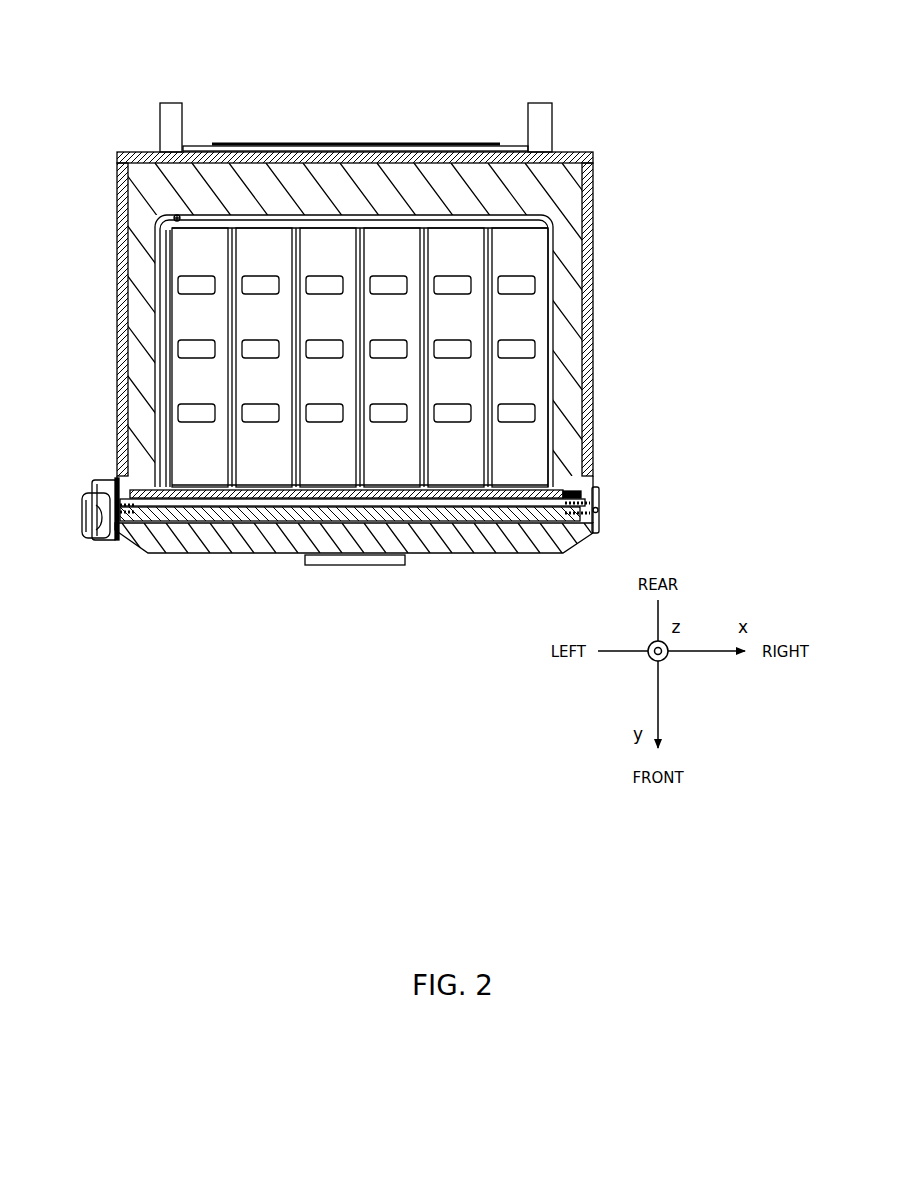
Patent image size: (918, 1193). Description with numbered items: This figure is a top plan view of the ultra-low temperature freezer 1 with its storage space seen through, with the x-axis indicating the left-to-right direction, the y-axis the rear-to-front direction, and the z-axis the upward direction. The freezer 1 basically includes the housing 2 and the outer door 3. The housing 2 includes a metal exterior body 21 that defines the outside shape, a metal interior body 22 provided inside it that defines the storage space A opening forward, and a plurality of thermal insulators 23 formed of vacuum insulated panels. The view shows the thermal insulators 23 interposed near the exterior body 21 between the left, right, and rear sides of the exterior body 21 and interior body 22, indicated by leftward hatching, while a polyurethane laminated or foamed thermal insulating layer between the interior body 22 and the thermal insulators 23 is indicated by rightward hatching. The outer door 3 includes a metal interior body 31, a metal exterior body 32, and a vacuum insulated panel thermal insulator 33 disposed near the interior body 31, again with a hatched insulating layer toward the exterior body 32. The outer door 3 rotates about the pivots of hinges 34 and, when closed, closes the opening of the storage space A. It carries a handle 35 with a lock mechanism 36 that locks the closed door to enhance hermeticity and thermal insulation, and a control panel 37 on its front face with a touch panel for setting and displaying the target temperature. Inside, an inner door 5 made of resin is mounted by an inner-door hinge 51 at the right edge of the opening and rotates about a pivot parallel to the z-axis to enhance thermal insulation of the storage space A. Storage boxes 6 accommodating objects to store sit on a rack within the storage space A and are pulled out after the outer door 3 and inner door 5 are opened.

The ultra-low temperature freezer 1 is at (92, 27).
The housing 2 is at (609, 185).
The exterior body 21 is at (590, 255).
The interior body 22 is at (538, 320).
The thermal insulator 23 is at (350, 157).
The storage box 6 is at (325, 240).
The storage space A is at (391, 240).
The outer door 3 is at (158, 630).
The interior body 31 is at (247, 518).
The exterior body 32 is at (190, 555).
The thermal insulator 33 is at (515, 500).
The hinge 34 is at (610, 497).
The handle 35 is at (82, 522).
The lock mechanism 36 is at (92, 485).
The control panel 37 is at (355, 566).
The inner door 5 is at (437, 517).
The inner-door hinge 51 is at (571, 493).